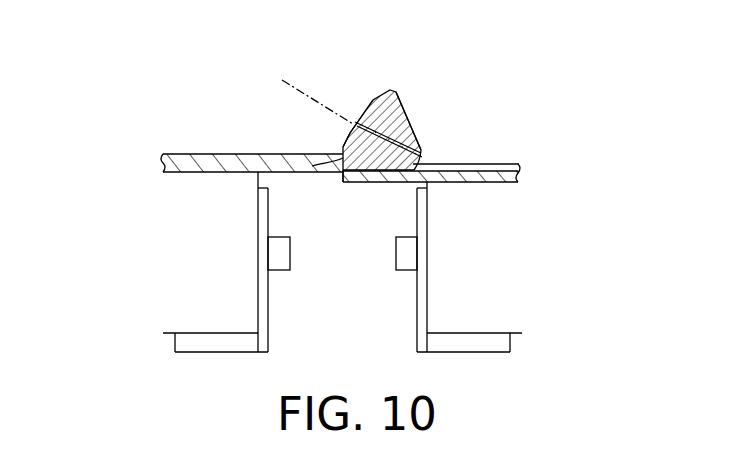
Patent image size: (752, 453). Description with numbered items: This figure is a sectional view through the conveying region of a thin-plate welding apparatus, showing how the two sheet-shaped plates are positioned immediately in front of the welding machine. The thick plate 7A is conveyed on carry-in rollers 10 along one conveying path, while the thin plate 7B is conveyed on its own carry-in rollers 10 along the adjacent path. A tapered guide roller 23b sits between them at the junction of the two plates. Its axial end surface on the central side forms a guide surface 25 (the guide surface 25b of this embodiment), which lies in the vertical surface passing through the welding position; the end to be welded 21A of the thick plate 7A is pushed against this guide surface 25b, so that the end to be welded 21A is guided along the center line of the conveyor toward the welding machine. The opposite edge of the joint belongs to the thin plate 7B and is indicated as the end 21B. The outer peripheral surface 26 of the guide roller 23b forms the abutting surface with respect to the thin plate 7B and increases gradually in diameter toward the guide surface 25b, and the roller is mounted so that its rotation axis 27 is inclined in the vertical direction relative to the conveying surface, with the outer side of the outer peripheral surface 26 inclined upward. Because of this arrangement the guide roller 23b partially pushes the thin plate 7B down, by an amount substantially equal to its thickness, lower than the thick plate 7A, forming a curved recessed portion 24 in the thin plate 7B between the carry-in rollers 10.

The thick plate 7A is at (190, 153).
The thin plate 7B is at (481, 184).
The carry-in roller 10 is at (235, 304).
The end to be welded 21A is at (346, 141).
The second joint edge 21B is at (343, 175).
The guide roller 23b is at (401, 107).
The recessed portion 24 is at (501, 163).
The guide surface 25 is at (312, 166).
The guide surface 25b is at (386, 89).
The outer peripheral surface 26 is at (410, 127).
The rotation axis 27 is at (306, 92).